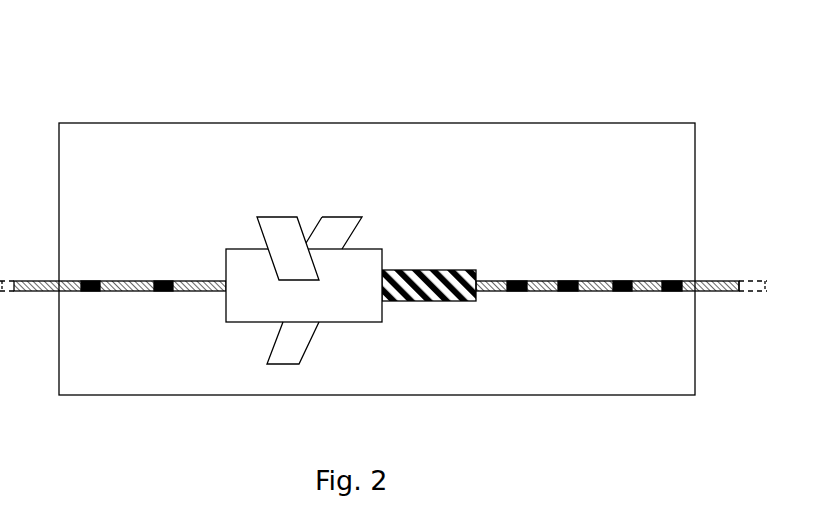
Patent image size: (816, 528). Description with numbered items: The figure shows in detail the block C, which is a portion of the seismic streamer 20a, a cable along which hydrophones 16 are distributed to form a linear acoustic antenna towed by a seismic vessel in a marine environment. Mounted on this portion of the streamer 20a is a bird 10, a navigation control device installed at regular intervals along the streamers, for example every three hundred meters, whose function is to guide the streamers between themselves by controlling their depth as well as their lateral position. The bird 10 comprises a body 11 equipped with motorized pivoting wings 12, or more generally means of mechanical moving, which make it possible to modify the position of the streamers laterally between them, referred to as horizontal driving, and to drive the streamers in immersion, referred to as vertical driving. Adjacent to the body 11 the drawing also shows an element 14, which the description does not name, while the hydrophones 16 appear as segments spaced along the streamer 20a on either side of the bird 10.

The block C is at (550, 123).
The bird 10 is at (274, 254).
The body 11 is at (237, 310).
The motorized pivoting wings 12 is at (275, 230).
The coupling 14 is at (435, 298).
The hydrophones 16 is at (622, 281).
The seismic streamer 20a is at (705, 281).